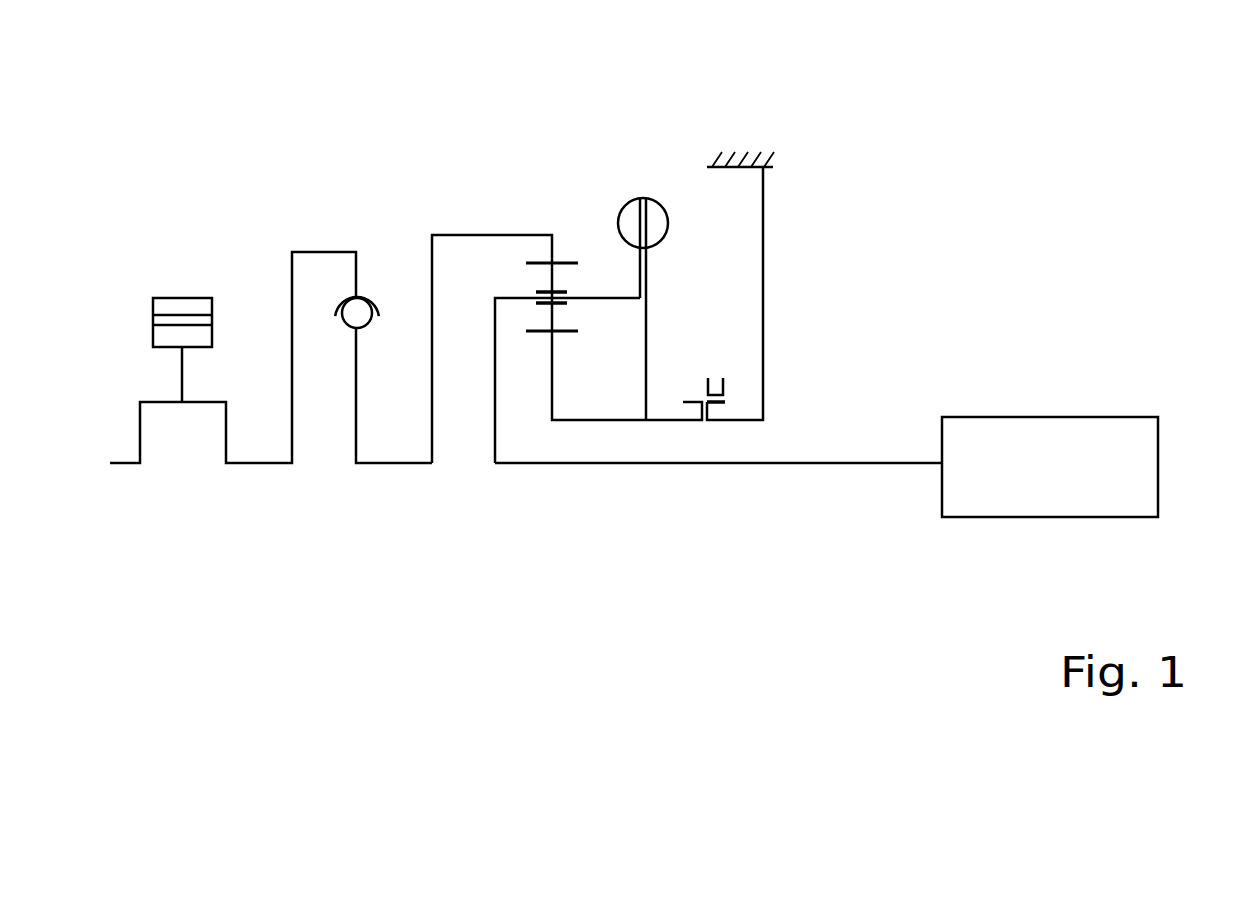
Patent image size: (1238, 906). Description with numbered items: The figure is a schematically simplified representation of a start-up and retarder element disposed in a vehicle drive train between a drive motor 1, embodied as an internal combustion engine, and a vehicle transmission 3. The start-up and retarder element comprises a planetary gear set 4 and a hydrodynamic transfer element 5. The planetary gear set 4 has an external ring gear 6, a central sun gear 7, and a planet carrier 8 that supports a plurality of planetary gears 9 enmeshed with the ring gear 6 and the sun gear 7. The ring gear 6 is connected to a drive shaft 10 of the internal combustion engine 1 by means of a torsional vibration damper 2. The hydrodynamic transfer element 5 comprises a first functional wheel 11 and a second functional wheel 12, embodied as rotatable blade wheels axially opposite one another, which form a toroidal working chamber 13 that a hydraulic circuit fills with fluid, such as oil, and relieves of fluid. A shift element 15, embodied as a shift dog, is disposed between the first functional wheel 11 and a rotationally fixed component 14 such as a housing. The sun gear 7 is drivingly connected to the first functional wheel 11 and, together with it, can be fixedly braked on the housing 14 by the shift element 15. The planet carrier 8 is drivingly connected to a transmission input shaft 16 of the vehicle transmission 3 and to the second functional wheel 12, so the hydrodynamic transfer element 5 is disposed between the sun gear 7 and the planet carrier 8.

The drive motor 1 is at (170, 348).
The torsional vibration damper 2 is at (347, 331).
The vehicle transmission 3 is at (1002, 517).
The planetary gear set 4 is at (548, 230).
The hydrodynamic transfer element 5 is at (618, 198).
The ring gear 6 is at (550, 252).
The sun gear 7 is at (555, 368).
The planet carrier 8 is at (518, 300).
The planetary gears 9 is at (553, 314).
The drive shaft 10 is at (258, 464).
The first functional wheel 11 is at (660, 196).
The second functional wheel 12 is at (632, 198).
The working chamber 13 is at (644, 198).
The rotationally fixed component 14 is at (763, 152).
The shift element 15 is at (713, 405).
The transmission input shaft 16 is at (777, 464).